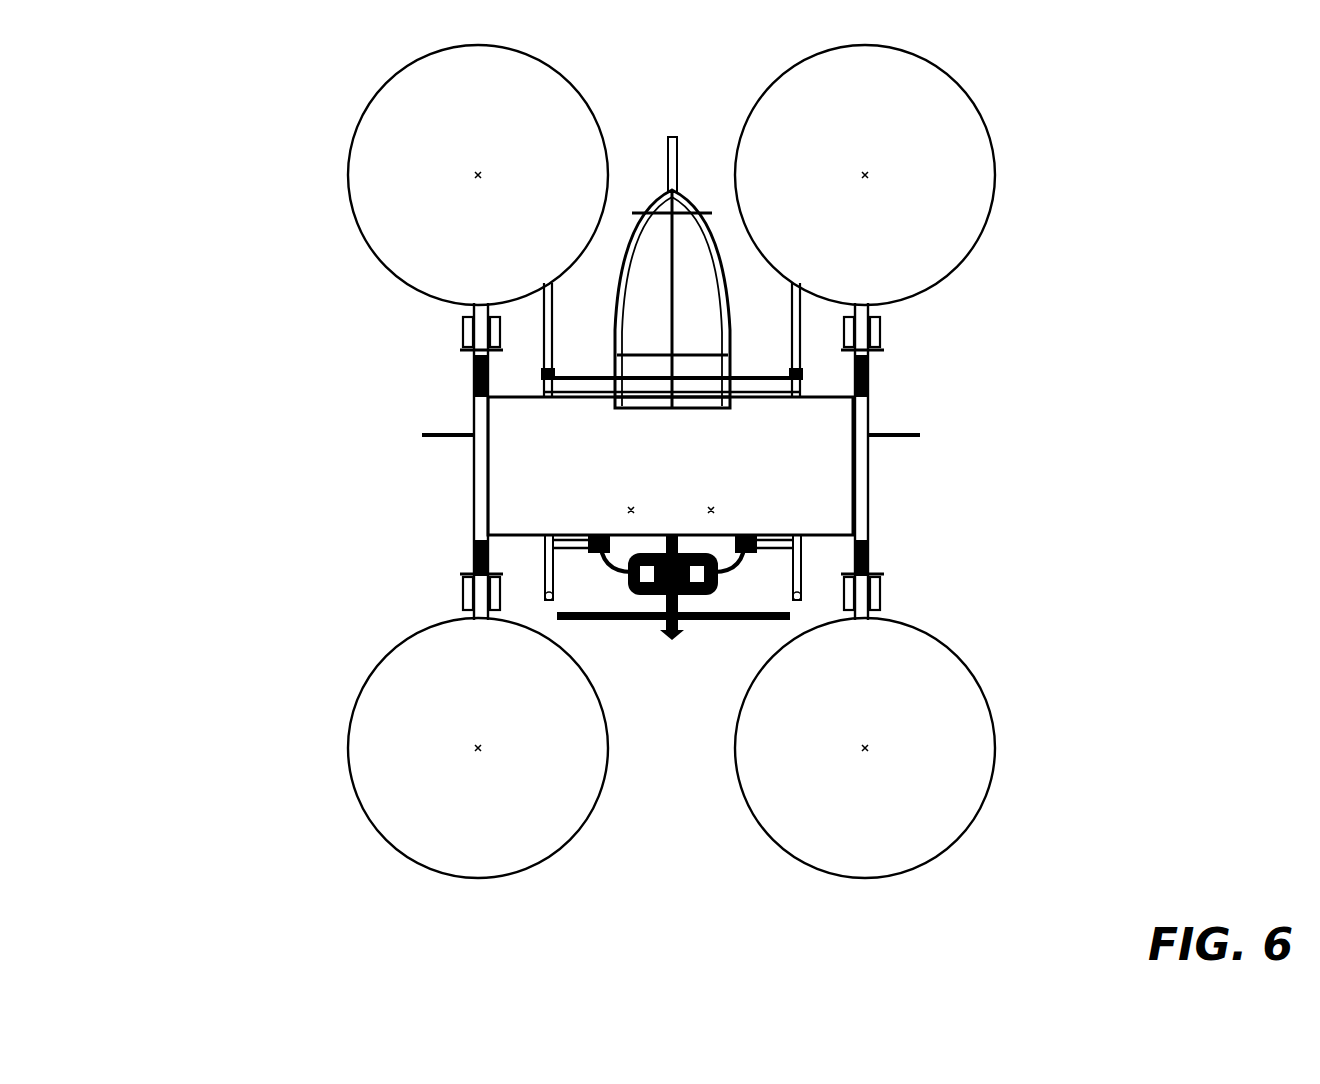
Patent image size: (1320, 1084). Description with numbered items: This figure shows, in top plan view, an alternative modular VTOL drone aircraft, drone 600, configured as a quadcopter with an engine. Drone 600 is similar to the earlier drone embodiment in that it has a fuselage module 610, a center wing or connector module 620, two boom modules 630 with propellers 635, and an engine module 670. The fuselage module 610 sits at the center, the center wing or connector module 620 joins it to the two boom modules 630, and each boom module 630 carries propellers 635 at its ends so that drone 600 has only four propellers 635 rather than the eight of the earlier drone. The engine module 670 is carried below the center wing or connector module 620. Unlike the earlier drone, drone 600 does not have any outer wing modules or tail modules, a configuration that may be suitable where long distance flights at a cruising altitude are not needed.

The drone 600 is at (228, 122).
The fuselage module 610 is at (697, 333).
The center wing or connector module 620 is at (795, 460).
The boom module 630 is at (477, 360).
The propeller 635 is at (368, 740).
The engine module 670 is at (600, 560).